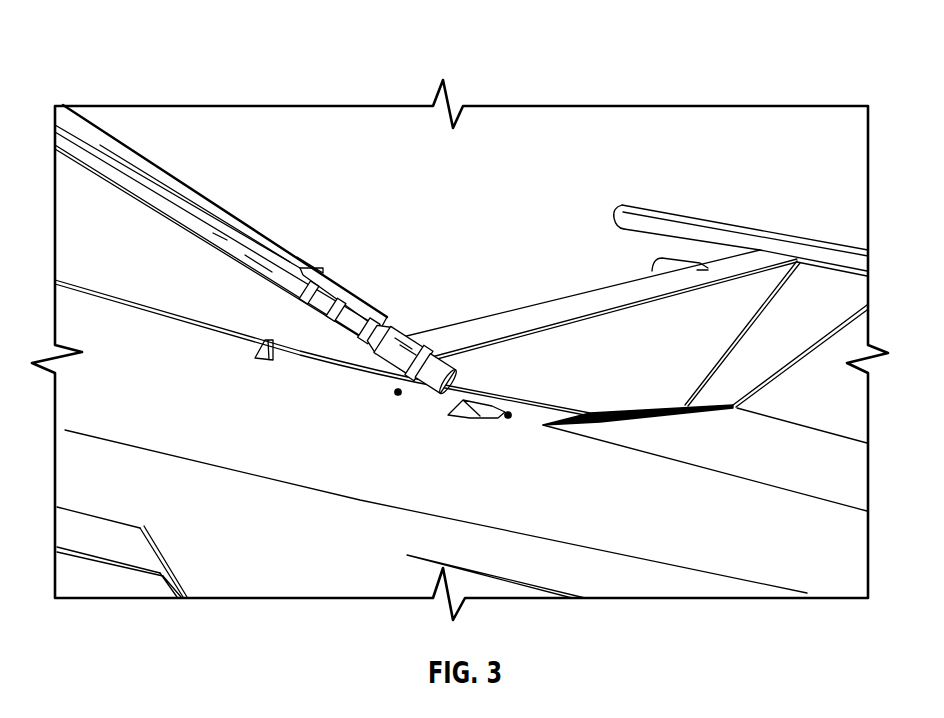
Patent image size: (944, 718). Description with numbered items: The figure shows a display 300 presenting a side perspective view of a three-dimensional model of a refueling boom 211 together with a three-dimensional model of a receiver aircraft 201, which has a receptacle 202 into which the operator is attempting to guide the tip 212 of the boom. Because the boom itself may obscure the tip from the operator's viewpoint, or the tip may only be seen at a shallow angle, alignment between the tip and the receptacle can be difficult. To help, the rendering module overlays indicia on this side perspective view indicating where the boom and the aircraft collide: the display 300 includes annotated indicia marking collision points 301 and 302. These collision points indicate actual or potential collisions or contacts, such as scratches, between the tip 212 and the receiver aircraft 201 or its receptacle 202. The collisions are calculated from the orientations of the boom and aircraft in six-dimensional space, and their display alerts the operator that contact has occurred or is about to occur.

The display 300 is at (665, 103).
The receiver aircraft 201 is at (521, 294).
The receptacle 202 is at (467, 430).
The refueling boom 211 is at (257, 226).
The tip 212 is at (444, 368).
The collision point 301 is at (393, 399).
The collision point 302 is at (510, 429).